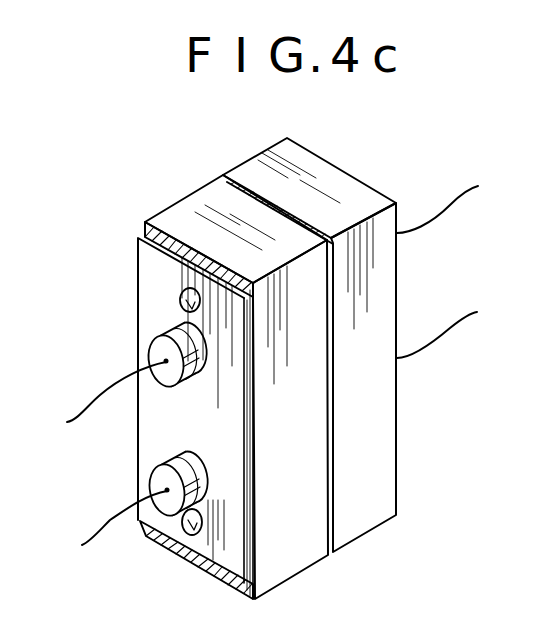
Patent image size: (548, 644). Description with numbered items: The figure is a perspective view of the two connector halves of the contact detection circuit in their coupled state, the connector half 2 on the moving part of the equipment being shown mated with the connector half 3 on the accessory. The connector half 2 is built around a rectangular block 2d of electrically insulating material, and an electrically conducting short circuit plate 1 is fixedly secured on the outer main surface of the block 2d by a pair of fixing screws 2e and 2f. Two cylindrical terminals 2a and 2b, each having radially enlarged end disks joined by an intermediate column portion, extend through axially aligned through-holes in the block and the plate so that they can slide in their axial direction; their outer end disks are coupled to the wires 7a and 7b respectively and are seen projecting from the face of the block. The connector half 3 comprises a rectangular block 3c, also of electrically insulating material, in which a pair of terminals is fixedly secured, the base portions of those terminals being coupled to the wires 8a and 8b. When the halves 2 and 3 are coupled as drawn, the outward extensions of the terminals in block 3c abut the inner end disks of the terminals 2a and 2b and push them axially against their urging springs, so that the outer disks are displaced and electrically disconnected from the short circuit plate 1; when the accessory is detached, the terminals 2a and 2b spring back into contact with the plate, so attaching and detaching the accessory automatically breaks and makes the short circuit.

The short circuit plate 1 is at (137, 272).
The connector half 2 is at (104, 214).
The terminal 2a is at (153, 355).
The terminal 2b is at (150, 483).
The rectangular block 2d is at (183, 199).
The fixing screw 2e is at (186, 300).
The fixing screw 2f is at (178, 554).
The mating connector half 3 is at (367, 168).
The rectangular block 3c is at (245, 163).
The wire 7a is at (82, 417).
The wire 7b is at (90, 542).
The wire 8a is at (453, 198).
The wire 8b is at (458, 315).